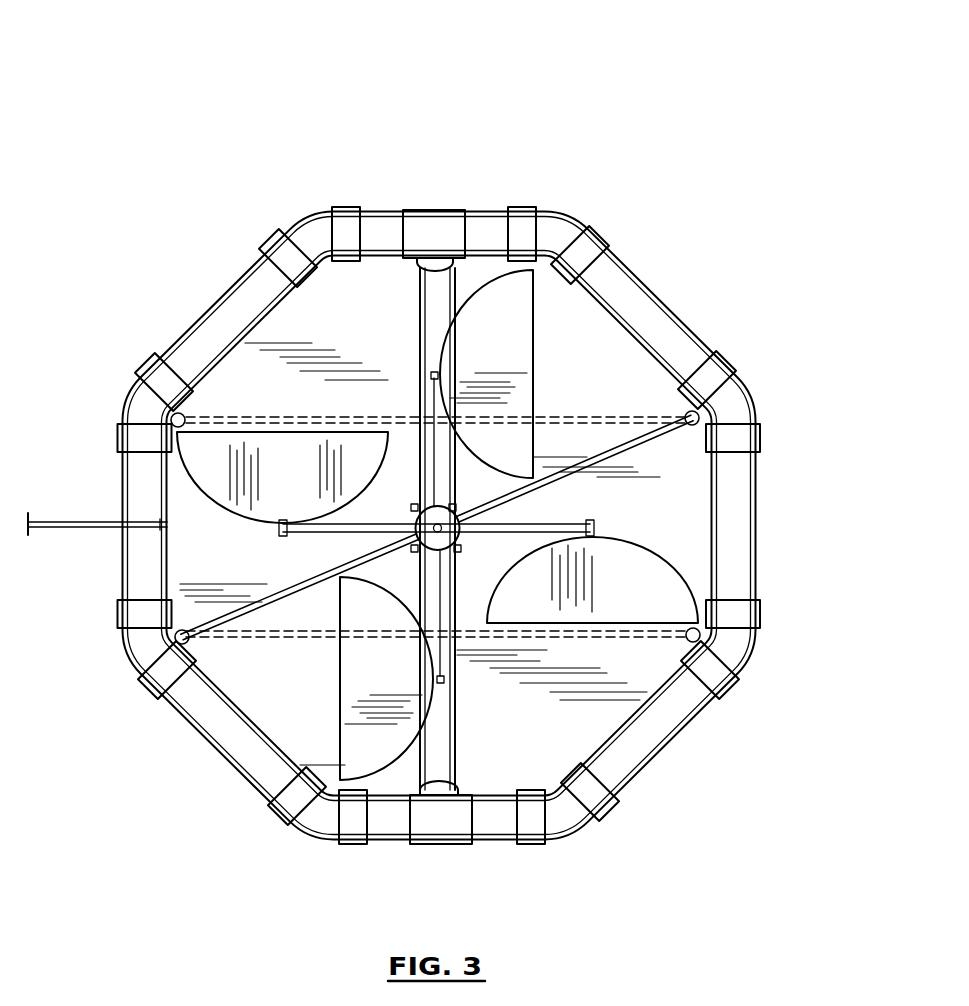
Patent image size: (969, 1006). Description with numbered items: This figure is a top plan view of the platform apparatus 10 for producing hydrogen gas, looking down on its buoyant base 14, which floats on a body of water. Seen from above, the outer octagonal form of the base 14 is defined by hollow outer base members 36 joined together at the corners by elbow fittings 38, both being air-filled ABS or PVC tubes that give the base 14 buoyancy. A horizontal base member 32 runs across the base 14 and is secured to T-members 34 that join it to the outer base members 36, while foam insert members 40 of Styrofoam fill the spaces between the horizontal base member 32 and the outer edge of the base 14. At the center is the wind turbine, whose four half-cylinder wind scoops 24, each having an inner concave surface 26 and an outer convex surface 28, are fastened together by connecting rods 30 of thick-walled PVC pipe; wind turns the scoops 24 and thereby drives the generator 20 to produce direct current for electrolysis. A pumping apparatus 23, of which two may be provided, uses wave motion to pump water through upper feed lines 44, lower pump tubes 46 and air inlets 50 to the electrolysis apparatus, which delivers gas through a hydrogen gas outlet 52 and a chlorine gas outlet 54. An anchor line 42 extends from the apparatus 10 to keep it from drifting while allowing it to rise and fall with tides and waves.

The platform apparatus 10 is at (150, 95).
The buoyant base 14 is at (808, 560).
The generator 20 is at (448, 515).
The pumping apparatus 23 is at (641, 425).
The wind scoop 24 is at (530, 272).
The inner concave surface 26 is at (333, 677).
The outer convex surface 28 is at (626, 532).
The connecting rod 30 is at (520, 525).
The horizontal base member 32 is at (432, 288).
The T-member 34 is at (447, 225).
The outer base member 36 is at (207, 330).
The elbow fitting 38 is at (313, 230).
The foam insert member 40 is at (222, 678).
The anchor line 42 is at (85, 520).
The upper feed line 44 is at (698, 418).
The lower pump tube 46 is at (575, 418).
The air inlet 50 is at (173, 414).
The hydrogen gas outlet 52 is at (420, 512).
The chlorine gas outlet 54 is at (460, 549).